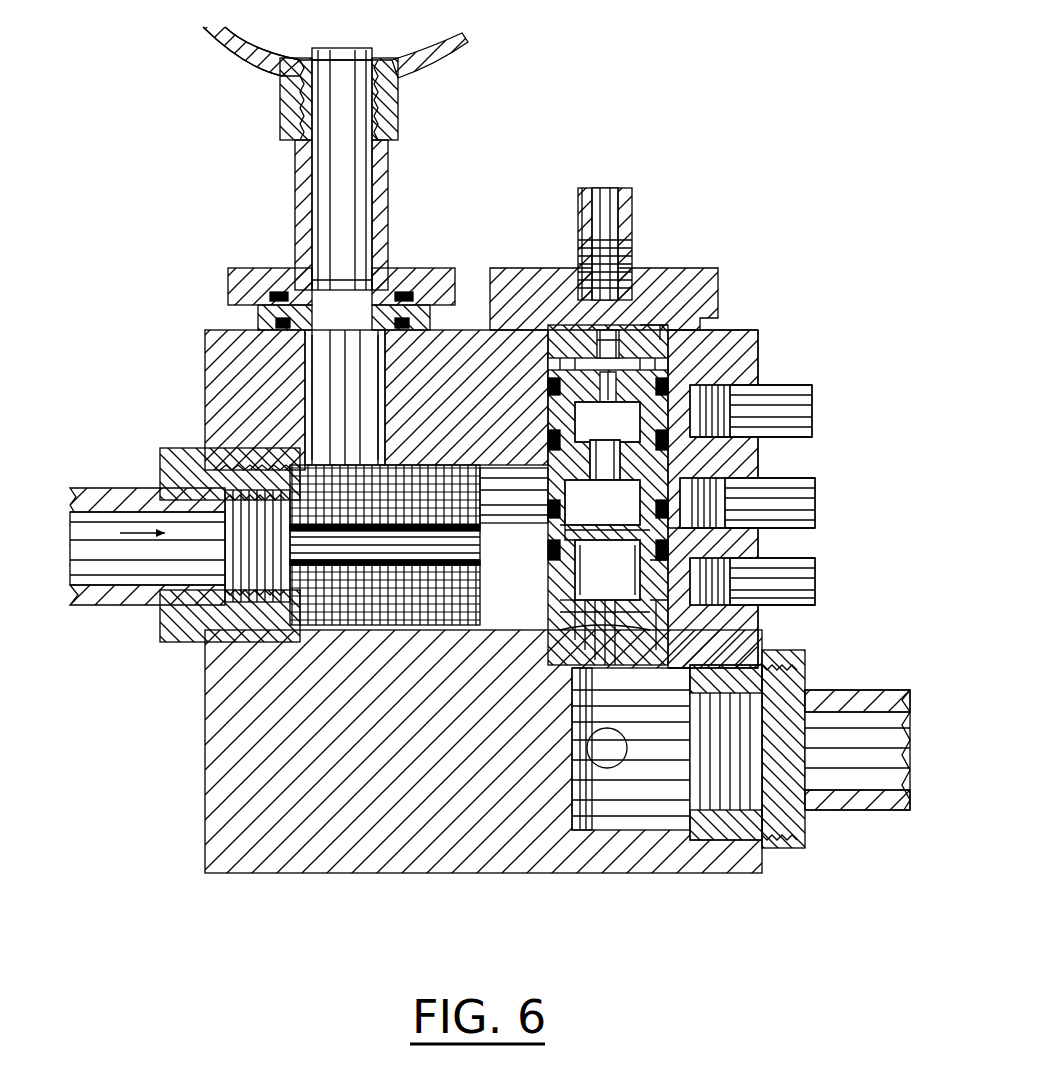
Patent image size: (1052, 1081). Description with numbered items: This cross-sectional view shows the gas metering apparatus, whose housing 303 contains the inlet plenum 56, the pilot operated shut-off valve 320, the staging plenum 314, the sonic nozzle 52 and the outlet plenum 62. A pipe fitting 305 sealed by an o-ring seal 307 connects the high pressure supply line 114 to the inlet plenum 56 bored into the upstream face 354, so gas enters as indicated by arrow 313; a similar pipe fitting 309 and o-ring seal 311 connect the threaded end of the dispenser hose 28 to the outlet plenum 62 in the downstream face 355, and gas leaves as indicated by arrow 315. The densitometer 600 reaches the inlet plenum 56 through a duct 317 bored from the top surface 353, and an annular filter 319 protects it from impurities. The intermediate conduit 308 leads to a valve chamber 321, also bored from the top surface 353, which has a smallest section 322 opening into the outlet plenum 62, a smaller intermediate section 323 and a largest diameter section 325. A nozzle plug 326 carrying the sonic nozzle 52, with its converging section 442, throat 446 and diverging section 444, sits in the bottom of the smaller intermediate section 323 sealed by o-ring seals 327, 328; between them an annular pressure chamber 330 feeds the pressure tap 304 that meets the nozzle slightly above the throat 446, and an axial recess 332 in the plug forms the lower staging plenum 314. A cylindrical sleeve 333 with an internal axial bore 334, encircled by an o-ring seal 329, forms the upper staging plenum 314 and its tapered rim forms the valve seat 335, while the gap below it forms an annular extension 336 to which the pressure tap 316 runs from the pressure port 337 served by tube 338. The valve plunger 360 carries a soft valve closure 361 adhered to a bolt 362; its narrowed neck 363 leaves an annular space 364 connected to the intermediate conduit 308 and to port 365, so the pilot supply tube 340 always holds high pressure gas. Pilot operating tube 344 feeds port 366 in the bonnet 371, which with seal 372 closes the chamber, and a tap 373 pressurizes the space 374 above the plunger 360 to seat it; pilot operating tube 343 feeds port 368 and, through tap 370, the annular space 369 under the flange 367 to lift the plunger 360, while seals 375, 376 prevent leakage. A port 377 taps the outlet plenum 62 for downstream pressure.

The densitometer 600 is at (243, 64).
The top surface 353 is at (476, 330).
The housing 303 is at (207, 340).
The duct 317 is at (308, 400).
The annular filter 319 is at (343, 397).
The o-ring seal 307 is at (222, 466).
The pipe fitting 305 is at (196, 448).
The high pressure supply line 114 is at (120, 490).
The arrow 313 is at (121, 516).
The inlet plenum 56 is at (362, 562).
The valve seat 335 is at (481, 544).
The valve chamber 321 is at (514, 495).
The upstream face 354 is at (205, 705).
The outlet plenum 62 is at (633, 718).
The port 377 is at (622, 752).
The smaller intermediate section 323 is at (623, 747).
The arrow 315 is at (832, 712).
The pipe fitting 309 is at (785, 848).
The o-ring seal 311 is at (762, 862).
The dispenser hose 28 is at (832, 812).
The space 374 is at (546, 336).
The seal 376 is at (547, 386).
The shut-off valve 320 is at (547, 438).
The seal 375 is at (547, 470).
The intermediate conduit 308 is at (547, 462).
The flange 367 is at (548, 363).
The annular space 369 is at (565, 393).
The bolt 362 is at (562, 418).
The narrowed neck 363 is at (575, 445).
The internal axial bore 334 is at (556, 548).
The o-ring seal 329 is at (562, 560).
The annular extension 336 is at (607, 568).
The staging plenum 314 is at (626, 598).
The axial recess 332 is at (566, 576).
The o-ring seal 328 is at (566, 592).
The annular pressure chamber 330 is at (566, 604).
The o-ring seal 327 is at (563, 624).
The throat 446 is at (578, 642).
The converging section 442 is at (585, 652).
The sonic nozzle 52 is at (588, 660).
The smallest section 322 is at (594, 665).
The nozzle plug 326 is at (600, 670).
The diverging section 444 is at (606, 675).
The pressure tap 304 is at (670, 620).
The bonnet 371 is at (702, 268).
The pilot operating tube 344 is at (632, 208).
The port 366 is at (632, 240).
The tap 373 is at (668, 300).
The seal 372 is at (700, 330).
The largest diameter section 325 is at (745, 372).
The downstream face 355 is at (745, 347).
The tap 370 is at (745, 397).
The port 368 is at (812, 413).
The pilot operating tube 343 is at (800, 386).
The valve plunger 360 is at (770, 445).
The port 365 is at (815, 496).
The pilot supply tube 340 is at (800, 480).
The annular space 364 is at (815, 510).
The soft valve closure 361 is at (770, 537).
The pressure port 337 is at (815, 590).
The cylindrical sleeve 333 is at (805, 560).
The tube 338 is at (810, 606).
The pressure tap 316 is at (760, 642).